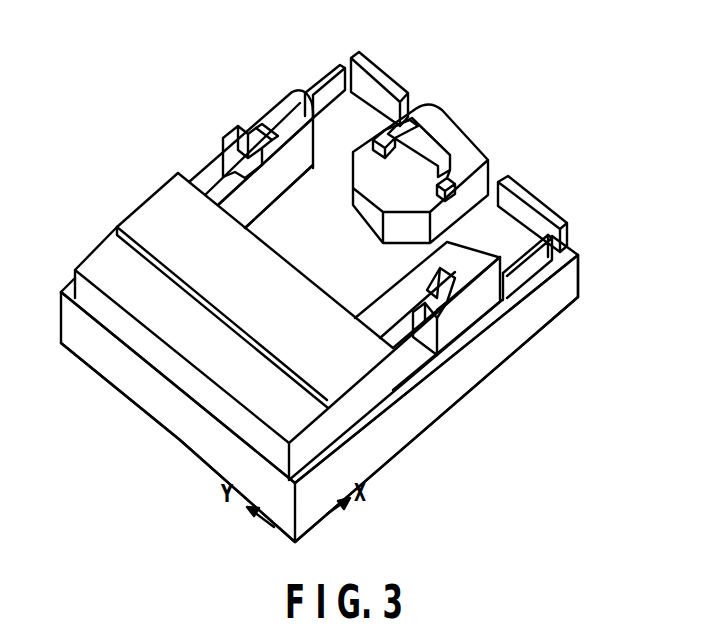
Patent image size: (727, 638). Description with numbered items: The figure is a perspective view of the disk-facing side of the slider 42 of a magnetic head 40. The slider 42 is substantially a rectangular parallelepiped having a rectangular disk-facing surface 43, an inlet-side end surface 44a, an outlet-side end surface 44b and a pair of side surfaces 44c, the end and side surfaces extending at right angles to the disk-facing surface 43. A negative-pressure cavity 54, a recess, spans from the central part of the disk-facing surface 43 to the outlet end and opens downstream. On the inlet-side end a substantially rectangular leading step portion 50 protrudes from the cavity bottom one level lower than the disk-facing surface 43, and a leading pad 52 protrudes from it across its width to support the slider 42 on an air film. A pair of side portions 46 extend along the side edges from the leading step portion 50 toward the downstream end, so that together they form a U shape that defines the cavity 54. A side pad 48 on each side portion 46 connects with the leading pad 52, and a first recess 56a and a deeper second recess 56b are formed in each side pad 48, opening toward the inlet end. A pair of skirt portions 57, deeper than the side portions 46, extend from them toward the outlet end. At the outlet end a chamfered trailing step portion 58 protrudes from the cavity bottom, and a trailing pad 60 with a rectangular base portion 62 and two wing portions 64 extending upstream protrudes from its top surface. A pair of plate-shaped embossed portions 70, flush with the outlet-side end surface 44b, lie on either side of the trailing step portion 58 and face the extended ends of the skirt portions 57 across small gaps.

The magnetic head 40 is at (458, 425).
The slider 42 is at (118, 379).
The disk-facing surface 43 is at (182, 208).
The inlet-side end surface 44a is at (167, 406).
The outlet-side end surface 44b is at (580, 267).
The side surfaces 44c is at (378, 432).
The side portions 46 is at (248, 190).
The side pad 48 is at (286, 100).
The leading step portion 50 is at (95, 263).
The leading pad 52 is at (140, 210).
The negative-pressure cavity 54 is at (300, 272).
The first recess 56a is at (262, 144).
The second recess 56b is at (228, 138).
The skirt portions 57 is at (323, 78).
The trailing step portion 58 is at (475, 157).
The trailing pad 60 is at (430, 128).
The base portion 62 is at (443, 138).
The wing portions 64 is at (389, 150).
The embossed portions 70 is at (371, 48).